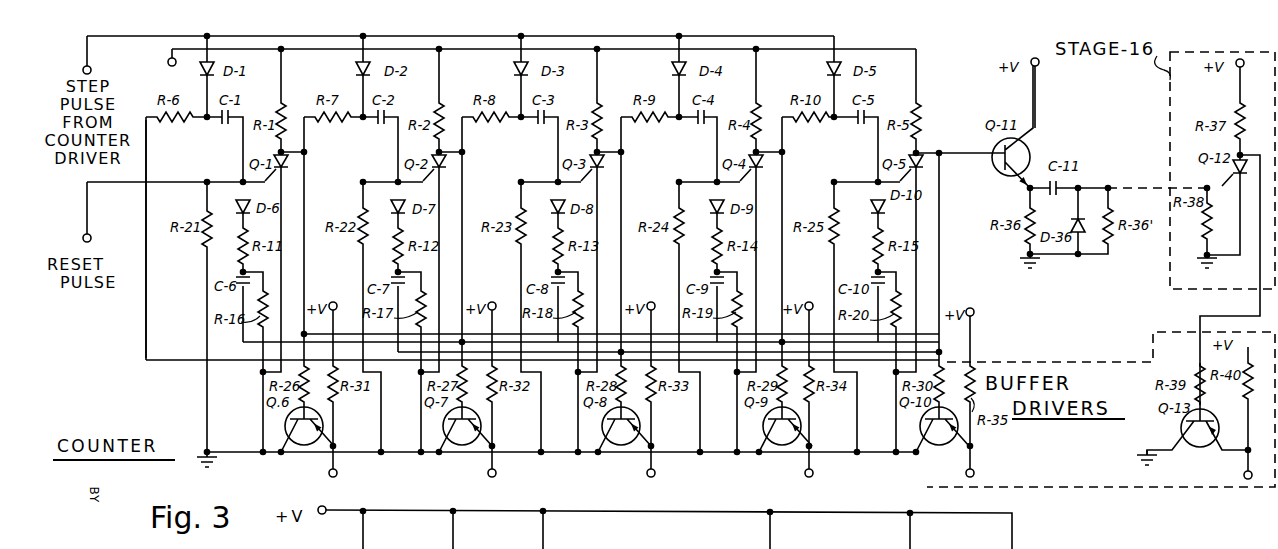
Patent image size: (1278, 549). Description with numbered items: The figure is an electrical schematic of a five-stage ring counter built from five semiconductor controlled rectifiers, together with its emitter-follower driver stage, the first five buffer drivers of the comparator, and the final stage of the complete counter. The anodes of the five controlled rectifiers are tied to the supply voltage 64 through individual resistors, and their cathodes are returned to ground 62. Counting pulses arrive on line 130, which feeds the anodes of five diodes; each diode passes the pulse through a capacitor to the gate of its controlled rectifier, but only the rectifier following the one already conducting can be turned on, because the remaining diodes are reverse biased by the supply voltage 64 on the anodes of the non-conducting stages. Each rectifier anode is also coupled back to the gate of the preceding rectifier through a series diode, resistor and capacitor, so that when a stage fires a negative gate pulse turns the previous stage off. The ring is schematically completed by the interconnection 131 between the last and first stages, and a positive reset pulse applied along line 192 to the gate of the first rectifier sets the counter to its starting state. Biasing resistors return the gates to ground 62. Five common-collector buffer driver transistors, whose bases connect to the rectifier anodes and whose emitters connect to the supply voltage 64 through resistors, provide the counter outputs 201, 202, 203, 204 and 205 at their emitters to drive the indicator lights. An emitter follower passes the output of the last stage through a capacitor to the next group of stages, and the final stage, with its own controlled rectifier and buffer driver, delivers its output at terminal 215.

The line 130 is at (121, 38).
The supply voltage 64 is at (166, 63).
The reset line 192 is at (91, 220).
The interconnection 131 is at (145, 320).
The ground 62 is at (214, 461).
The output 201 is at (337, 474).
The output 202 is at (496, 474).
The output 203 is at (655, 474).
The output 204 is at (813, 474).
The output 205 is at (974, 474).
The stage 16 buffer driver output terminal 215 is at (1243, 476).